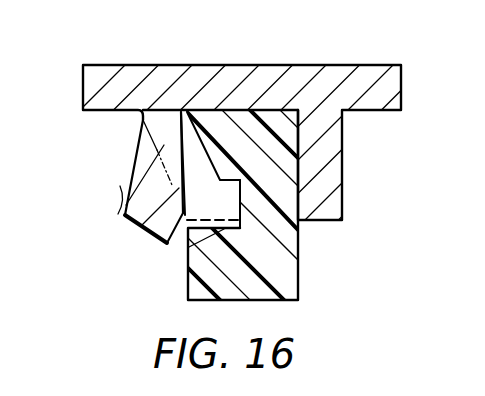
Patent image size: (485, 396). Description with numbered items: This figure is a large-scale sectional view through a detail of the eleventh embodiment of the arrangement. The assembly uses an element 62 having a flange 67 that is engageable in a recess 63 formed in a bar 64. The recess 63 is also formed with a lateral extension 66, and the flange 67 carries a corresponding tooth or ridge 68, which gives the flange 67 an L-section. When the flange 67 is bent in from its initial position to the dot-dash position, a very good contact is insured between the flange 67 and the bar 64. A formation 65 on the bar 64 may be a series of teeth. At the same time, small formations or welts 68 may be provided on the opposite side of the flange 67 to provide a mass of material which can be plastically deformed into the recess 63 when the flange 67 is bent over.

The element 62 is at (122, 73).
The recess 63 is at (192, 166).
The bar 64 is at (288, 280).
The formation 65 is at (183, 215).
The lateral extension 66 is at (230, 202).
The flange 67 is at (146, 163).
The tooth or ridge 68 is at (120, 200).